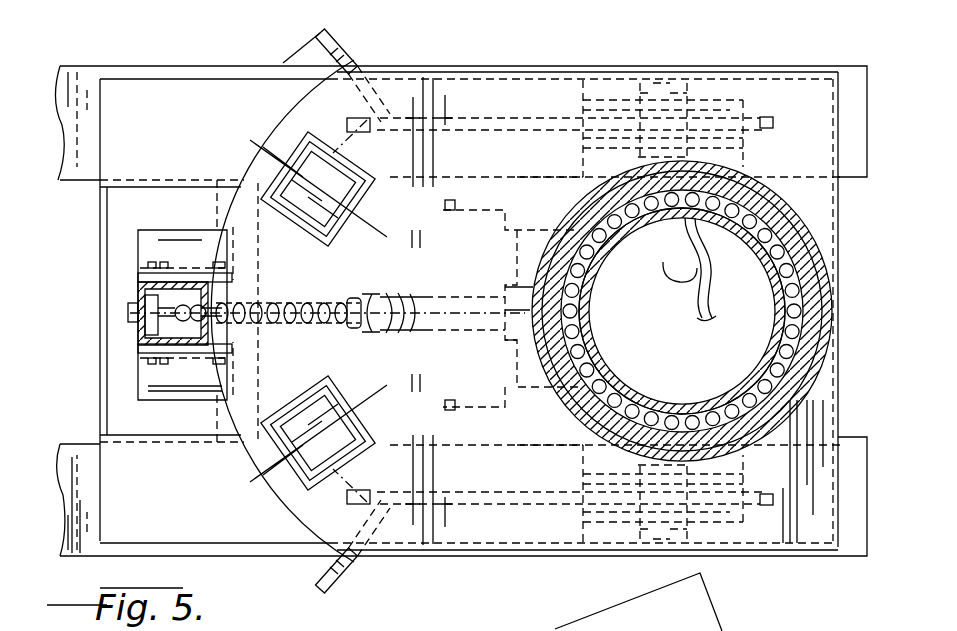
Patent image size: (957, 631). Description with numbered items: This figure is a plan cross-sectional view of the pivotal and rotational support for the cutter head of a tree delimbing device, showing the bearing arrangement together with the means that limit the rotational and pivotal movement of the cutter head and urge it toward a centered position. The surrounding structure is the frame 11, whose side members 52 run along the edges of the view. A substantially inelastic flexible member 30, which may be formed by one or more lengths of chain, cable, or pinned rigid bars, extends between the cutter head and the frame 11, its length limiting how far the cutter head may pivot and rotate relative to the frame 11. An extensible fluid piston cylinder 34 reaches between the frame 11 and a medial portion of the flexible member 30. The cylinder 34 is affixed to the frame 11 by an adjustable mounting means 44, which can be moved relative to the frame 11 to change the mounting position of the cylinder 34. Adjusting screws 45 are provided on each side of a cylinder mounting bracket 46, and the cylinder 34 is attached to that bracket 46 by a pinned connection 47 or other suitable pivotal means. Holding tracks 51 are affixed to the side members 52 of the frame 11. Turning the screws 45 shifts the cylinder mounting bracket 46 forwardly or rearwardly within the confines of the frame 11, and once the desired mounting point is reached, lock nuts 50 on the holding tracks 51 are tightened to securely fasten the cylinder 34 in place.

The frame 11 is at (83, 92).
The side members 52 is at (84, 180).
The flexible member 30 is at (303, 301).
The extensible fluid piston cylinder 34 is at (463, 279).
The adjustable mounting means 44 is at (533, 280).
The adjusting screws 45 is at (445, 206).
The cylinder mounting bracket 46 is at (502, 346).
The pinned connection 47 is at (530, 310).
The lock nuts 50 is at (668, 263).
The holding tracks 51 is at (533, 177).